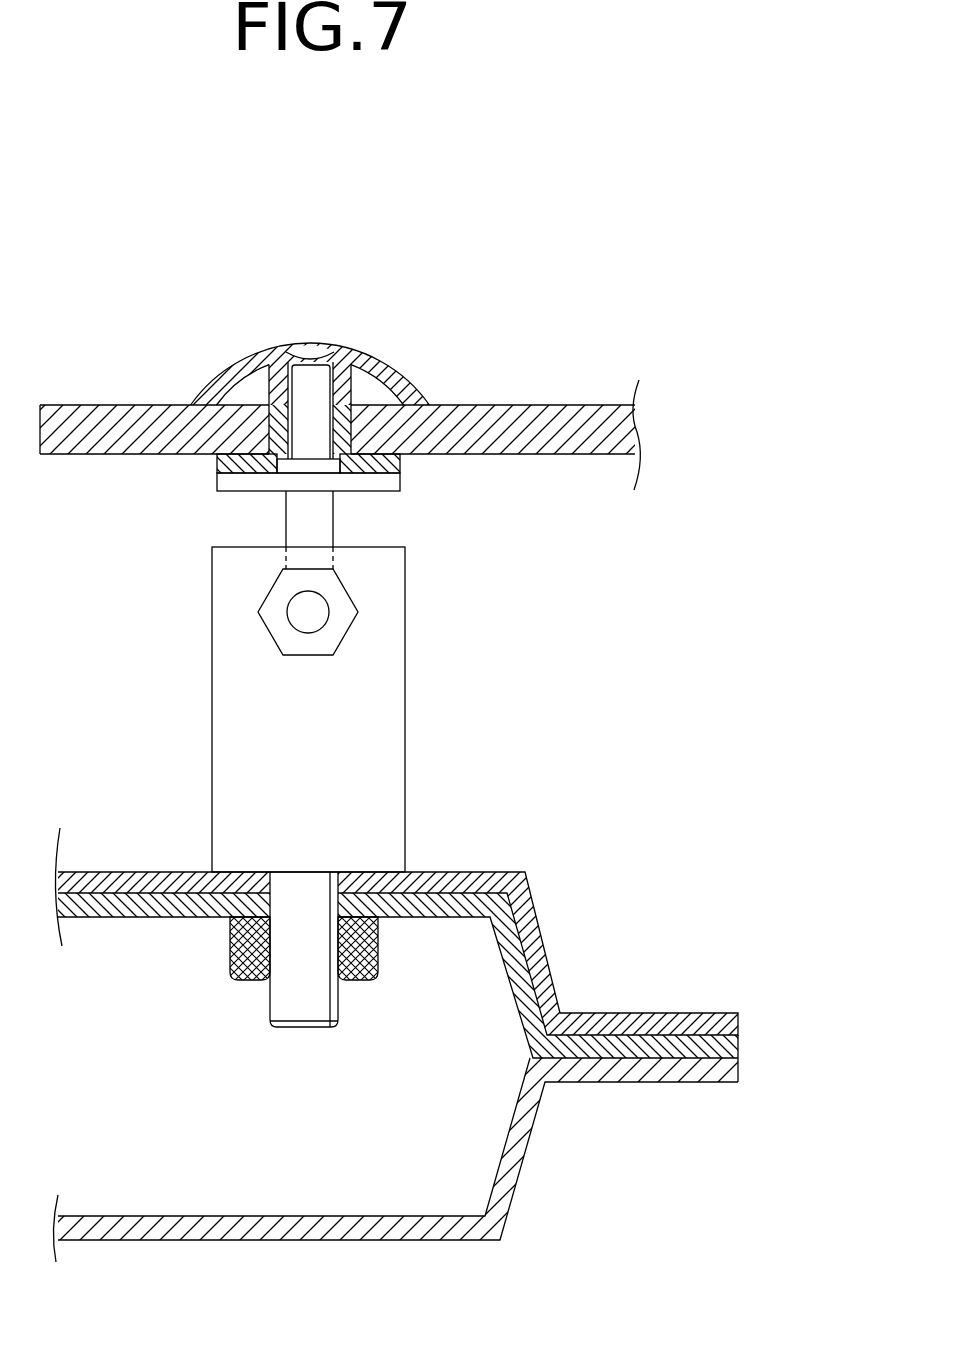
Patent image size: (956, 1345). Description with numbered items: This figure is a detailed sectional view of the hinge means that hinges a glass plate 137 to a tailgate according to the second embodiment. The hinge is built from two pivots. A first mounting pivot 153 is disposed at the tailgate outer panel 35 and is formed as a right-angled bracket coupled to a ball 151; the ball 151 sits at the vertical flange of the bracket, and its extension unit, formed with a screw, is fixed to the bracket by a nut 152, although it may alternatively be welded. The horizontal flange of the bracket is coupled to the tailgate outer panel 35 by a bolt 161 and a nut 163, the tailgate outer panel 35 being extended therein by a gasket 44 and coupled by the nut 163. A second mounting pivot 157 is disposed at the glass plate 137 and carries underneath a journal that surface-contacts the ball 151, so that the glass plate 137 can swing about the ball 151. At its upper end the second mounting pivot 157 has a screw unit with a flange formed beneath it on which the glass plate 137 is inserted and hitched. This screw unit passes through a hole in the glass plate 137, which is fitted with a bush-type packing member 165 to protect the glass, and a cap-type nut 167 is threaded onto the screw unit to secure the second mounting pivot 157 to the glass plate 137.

The glass plate 137 is at (544, 398).
The cap-type nut 167 is at (377, 358).
The bush-type packing member 165 is at (400, 464).
The second mounting pivot 157 is at (283, 510).
The first mounting pivot 153 is at (206, 750).
The nut 152 is at (306, 656).
The ball 151 is at (340, 612).
The tailgate outer panel 35 is at (527, 917).
The gasket 44 is at (113, 915).
The nut 163 is at (247, 983).
The bolt 161 is at (320, 1007).